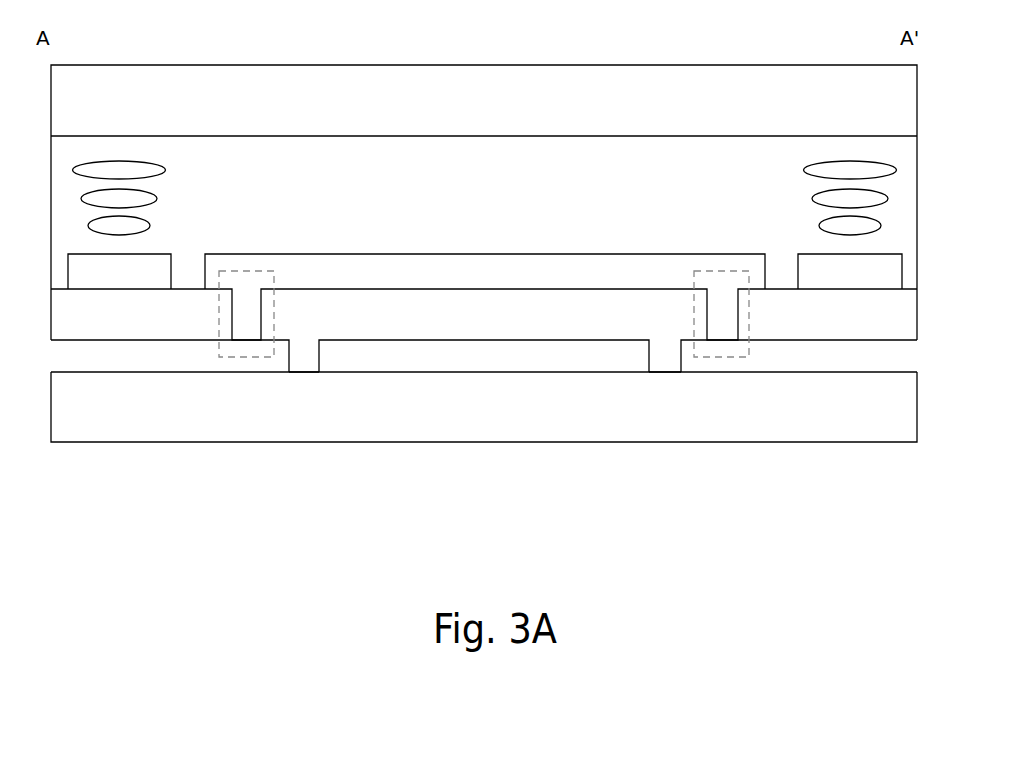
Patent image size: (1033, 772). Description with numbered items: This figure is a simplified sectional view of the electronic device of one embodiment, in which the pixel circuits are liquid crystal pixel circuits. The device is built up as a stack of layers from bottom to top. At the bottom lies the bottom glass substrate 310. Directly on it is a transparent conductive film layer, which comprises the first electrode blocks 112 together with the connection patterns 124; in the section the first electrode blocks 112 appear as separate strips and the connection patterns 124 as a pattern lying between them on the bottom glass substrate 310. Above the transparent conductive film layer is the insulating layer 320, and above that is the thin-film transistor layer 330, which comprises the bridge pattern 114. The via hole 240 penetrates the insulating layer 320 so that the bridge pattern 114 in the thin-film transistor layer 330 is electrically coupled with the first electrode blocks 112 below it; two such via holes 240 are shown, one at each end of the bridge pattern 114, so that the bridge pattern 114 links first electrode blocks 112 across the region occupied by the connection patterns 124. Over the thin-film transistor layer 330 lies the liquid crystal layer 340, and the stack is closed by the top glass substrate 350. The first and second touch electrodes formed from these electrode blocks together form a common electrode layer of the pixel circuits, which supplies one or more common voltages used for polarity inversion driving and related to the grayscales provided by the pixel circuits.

The top glass substrate 350 is at (913, 100).
The liquid crystal layer 340 is at (930, 135).
The thin-film transistor layer 330 is at (895, 273).
The insulating layer 320 is at (910, 315).
The bottom glass substrate 310 is at (910, 404).
The first electrode blocks 112 is at (161, 355).
The bridge pattern 114 is at (446, 277).
The connection patterns 124 is at (486, 355).
The via hole 240 is at (247, 355).